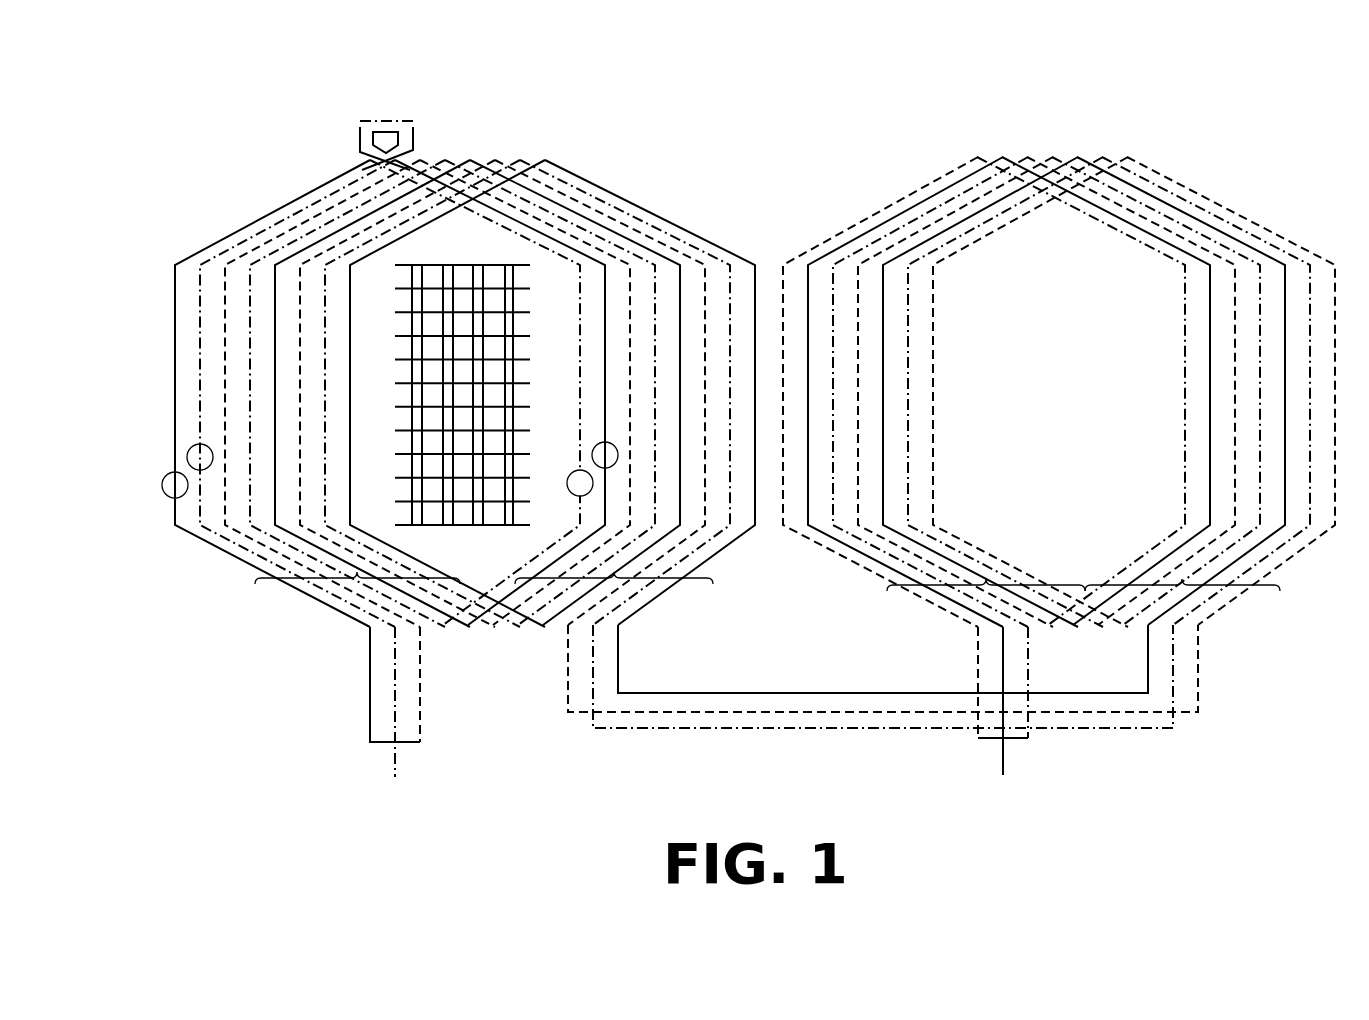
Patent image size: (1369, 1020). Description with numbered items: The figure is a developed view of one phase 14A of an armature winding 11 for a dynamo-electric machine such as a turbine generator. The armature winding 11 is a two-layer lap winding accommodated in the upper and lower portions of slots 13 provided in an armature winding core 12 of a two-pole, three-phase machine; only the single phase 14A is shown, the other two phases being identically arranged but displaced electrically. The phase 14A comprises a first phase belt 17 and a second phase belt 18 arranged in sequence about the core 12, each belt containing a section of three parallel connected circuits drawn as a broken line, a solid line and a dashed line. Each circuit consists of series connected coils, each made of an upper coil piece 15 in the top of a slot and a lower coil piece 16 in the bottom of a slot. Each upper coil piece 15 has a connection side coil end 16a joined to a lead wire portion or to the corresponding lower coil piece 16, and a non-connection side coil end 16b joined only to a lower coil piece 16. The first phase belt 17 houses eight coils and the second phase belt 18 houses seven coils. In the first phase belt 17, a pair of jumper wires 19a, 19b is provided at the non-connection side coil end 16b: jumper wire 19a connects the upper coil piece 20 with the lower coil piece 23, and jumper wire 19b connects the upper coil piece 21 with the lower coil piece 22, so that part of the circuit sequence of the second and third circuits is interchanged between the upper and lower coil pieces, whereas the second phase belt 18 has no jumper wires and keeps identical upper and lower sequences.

The armature winding 11 is at (815, 120).
The armature winding core 12 is at (432, 284).
The slots 13 is at (478, 325).
The phase 14A is at (727, 250).
The upper coil piece 15 is at (353, 582).
The lower coil piece 16 is at (617, 582).
The connection side coil end 16a is at (372, 694).
The non-connection side coil end 16b is at (356, 132).
The first phase belt 17 is at (197, 250).
The second phase belt 18 is at (1283, 224).
The jumper wire 19a is at (398, 135).
The jumper wire 19b is at (388, 117).
The upper coil piece 20 is at (252, 228).
The upper coil piece 21 is at (320, 192).
The lower coil piece 22 is at (560, 182).
The lower coil piece 23 is at (568, 240).